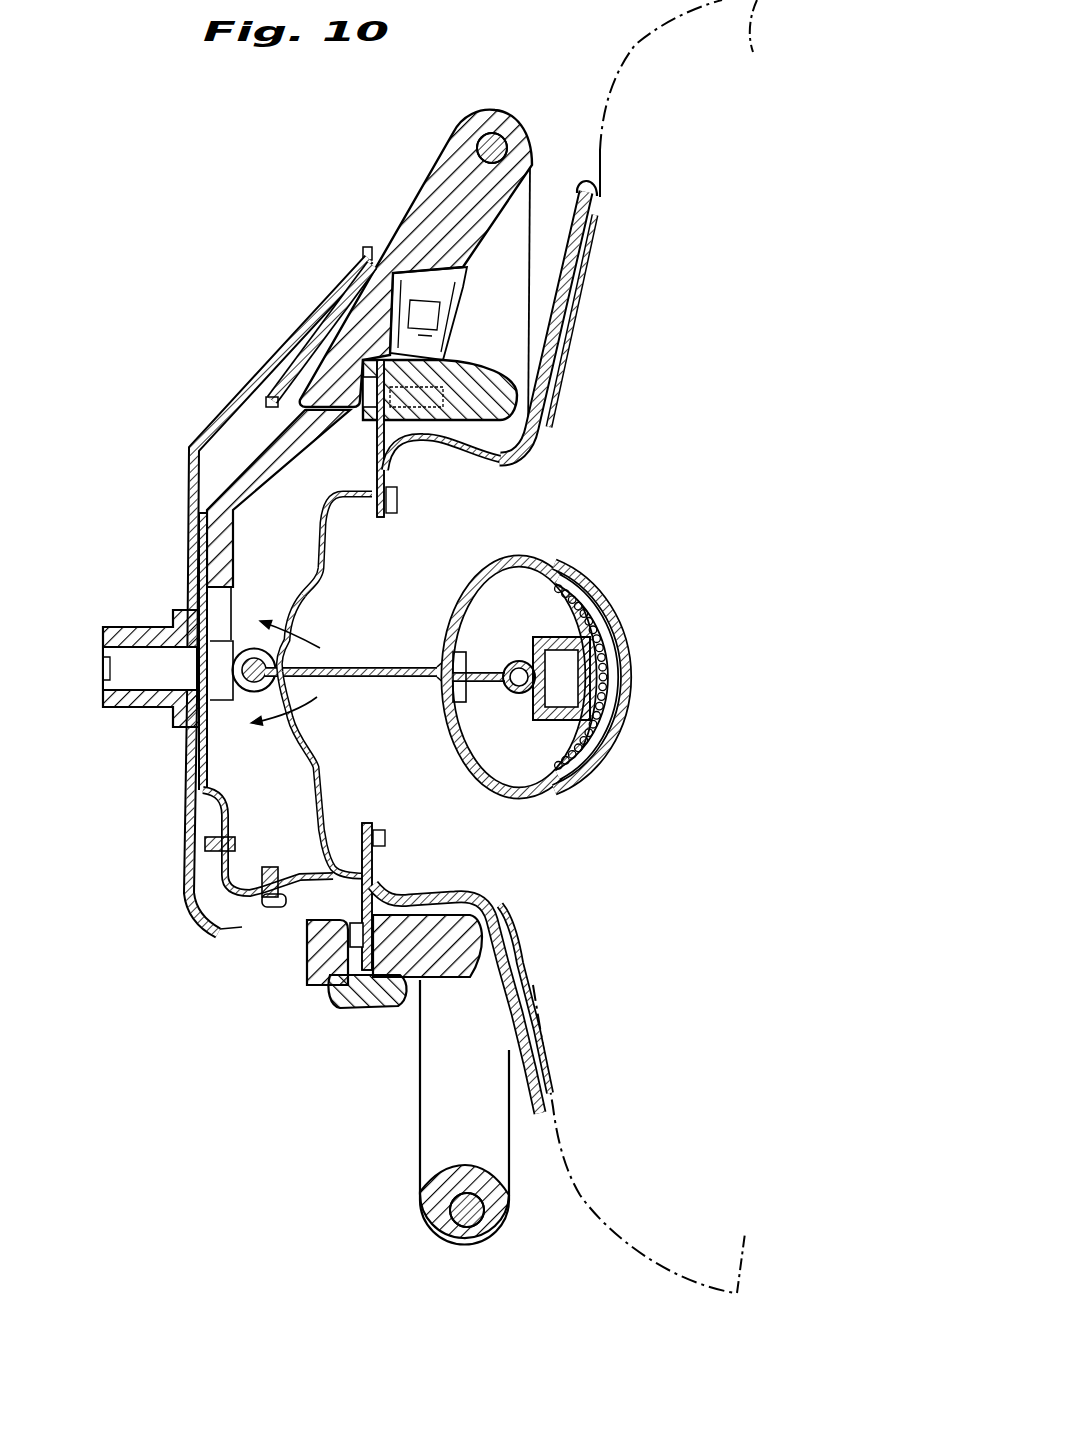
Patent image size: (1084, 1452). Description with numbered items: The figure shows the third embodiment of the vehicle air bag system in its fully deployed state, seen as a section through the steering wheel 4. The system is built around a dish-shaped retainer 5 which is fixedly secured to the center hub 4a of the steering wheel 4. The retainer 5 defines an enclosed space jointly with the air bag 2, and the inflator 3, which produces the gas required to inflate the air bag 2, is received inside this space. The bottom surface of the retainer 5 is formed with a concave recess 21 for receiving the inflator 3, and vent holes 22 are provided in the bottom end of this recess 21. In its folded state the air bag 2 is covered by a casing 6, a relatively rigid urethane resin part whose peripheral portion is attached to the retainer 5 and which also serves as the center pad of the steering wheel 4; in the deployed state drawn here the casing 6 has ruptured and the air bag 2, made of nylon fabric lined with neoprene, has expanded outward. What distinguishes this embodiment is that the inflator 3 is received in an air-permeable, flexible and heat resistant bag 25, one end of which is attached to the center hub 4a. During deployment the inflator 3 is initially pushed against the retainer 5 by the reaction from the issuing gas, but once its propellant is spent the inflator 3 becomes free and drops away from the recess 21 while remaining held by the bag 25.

The air bag 2 is at (607, 90).
The inflator 3 is at (521, 604).
The steering wheel 4 is at (505, 122).
The center hub 4a is at (185, 731).
The retainer 5 is at (326, 519).
The casing 6 is at (572, 192).
The concave recess 21 is at (298, 733).
The vent holes 22 is at (288, 632).
The bag 25 is at (462, 773).